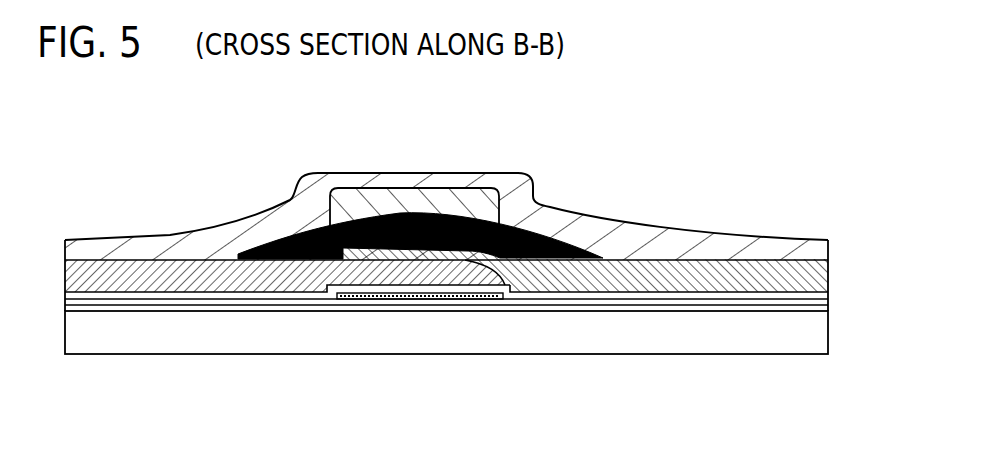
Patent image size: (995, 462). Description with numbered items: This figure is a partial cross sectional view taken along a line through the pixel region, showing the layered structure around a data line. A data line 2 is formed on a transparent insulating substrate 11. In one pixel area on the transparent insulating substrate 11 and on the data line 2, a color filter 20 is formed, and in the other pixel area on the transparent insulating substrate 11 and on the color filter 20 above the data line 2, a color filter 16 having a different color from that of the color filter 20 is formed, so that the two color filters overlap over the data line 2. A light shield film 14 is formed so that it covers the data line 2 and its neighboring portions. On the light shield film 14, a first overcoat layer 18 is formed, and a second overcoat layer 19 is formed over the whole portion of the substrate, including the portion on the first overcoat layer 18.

The data line 2 is at (418, 300).
The transparent insulating substrate 11 is at (620, 325).
The light shield film 14 is at (372, 218).
The color filter 16 is at (750, 272).
The first overcoat layer 18 is at (458, 200).
The second overcoat layer 19 is at (588, 227).
The color filter 20 is at (127, 272).